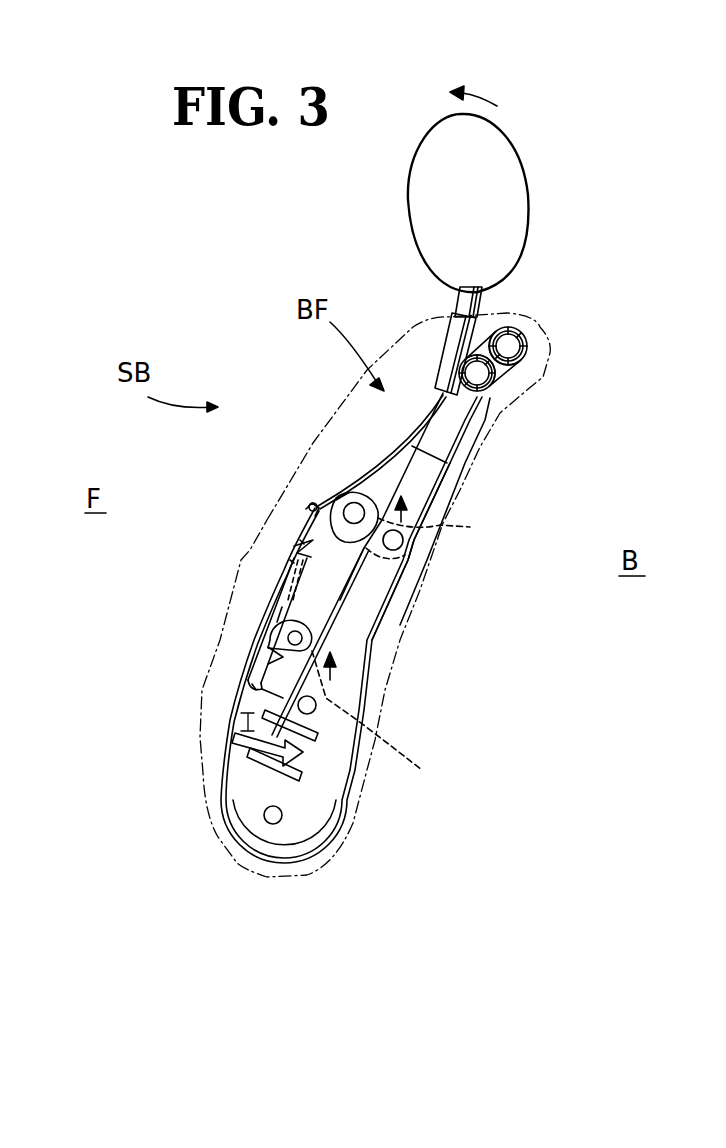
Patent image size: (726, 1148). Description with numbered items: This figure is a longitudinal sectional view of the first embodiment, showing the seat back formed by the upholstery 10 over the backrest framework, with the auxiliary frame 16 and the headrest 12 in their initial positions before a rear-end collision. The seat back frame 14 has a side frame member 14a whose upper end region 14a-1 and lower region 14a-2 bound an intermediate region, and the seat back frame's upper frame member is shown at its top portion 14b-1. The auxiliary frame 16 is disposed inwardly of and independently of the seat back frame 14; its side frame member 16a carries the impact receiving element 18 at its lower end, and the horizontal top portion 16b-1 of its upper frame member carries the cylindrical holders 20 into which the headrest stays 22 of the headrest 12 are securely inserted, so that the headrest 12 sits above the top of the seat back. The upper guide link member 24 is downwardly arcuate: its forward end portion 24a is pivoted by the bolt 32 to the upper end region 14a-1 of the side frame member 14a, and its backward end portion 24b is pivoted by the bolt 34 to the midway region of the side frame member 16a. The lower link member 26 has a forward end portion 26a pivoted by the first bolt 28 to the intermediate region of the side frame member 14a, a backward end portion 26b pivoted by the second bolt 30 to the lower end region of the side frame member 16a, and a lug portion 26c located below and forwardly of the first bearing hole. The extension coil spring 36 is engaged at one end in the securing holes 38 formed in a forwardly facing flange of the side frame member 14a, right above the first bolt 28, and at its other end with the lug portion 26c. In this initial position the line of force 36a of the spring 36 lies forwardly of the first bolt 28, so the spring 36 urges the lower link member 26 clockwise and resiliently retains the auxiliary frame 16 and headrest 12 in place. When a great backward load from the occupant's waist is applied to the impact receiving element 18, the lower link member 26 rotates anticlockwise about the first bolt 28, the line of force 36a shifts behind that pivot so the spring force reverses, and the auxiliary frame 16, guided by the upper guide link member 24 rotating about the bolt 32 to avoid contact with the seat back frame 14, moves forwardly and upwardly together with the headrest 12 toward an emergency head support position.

The upholstery 10 is at (267, 517).
The headrest 12 is at (524, 211).
The seat back frame 14 is at (380, 731).
The side frame member 14a is at (382, 711).
The upper end region 14a-1 is at (337, 490).
The lower region 14a-2 is at (318, 828).
The horizontal top portion of upper frame member of seat back frame 14b-1 is at (524, 333).
The auxiliary frame 16 is at (372, 639).
The side frame member 16a is at (366, 612).
The horizontal top portion 16b-1 is at (497, 391).
The impact receiving element 18 is at (348, 766).
The cylindrical holder 20 is at (440, 336).
The headrest stay 22 is at (460, 293).
The upper guide link member 24 is at (369, 488).
The forward end portion 24a is at (350, 492).
The backward end portion 24b is at (446, 534).
The lower link member 26 is at (266, 660).
The forward end portion 26a is at (277, 610).
The backward end portion 26b is at (403, 724).
The lug portion 26c is at (250, 686).
The first bolt 28 is at (353, 614).
The second bolt 30 is at (318, 711).
The bolt 32 is at (354, 452).
The bolt 34 is at (404, 542).
The extension coil spring 36 is at (300, 545).
The line of force 36a is at (280, 578).
The securing holes 38 is at (310, 505).